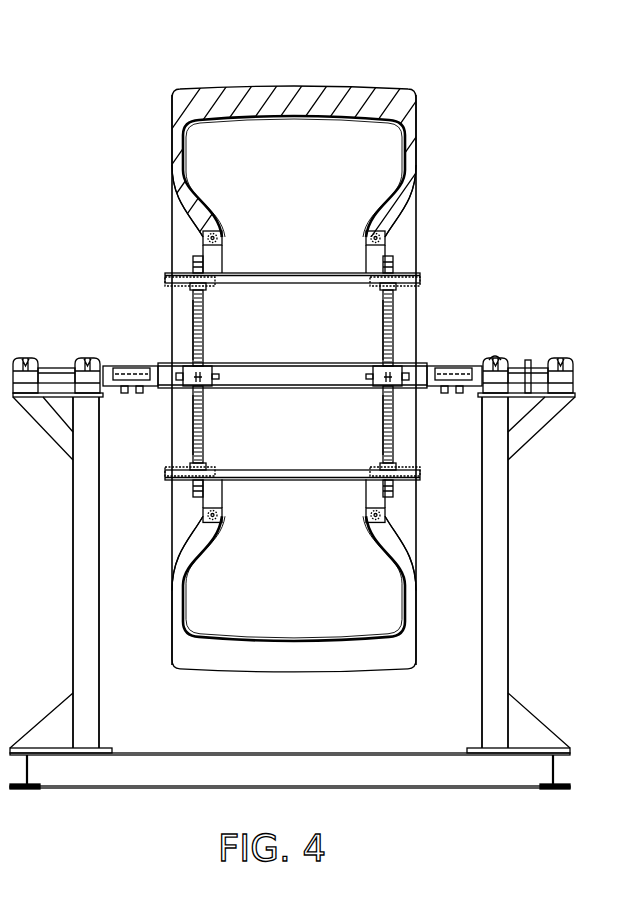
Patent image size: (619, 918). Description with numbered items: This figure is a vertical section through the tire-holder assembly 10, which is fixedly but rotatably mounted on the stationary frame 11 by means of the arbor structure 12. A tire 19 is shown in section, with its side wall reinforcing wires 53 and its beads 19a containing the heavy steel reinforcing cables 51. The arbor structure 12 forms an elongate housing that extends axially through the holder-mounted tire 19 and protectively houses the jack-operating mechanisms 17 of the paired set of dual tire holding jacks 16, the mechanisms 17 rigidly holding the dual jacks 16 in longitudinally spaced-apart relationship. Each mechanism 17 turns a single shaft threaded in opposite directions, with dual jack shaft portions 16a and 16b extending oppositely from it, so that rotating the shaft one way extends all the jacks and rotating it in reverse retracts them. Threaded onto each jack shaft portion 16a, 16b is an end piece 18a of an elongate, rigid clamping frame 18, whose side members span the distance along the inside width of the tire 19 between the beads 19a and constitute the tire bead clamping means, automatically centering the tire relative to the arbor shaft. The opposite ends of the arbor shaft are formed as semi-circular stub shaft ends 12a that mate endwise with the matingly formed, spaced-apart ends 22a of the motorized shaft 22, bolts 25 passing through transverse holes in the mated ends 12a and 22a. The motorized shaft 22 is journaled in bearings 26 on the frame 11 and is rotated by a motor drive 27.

The tire-holder assembly 10 is at (298, 268).
The stationary frame 11 is at (522, 602).
The arbor structure 12 is at (320, 363).
The stub shaft ends 12a is at (125, 366).
The dual tire holding jacks 16 is at (178, 444).
The jack shaft portion 16a is at (203, 331).
The jack shaft portion 16b is at (203, 441).
The jack-operating mechanism 17 is at (210, 387).
The clamping frame 18 is at (283, 283).
The end piece 18a is at (168, 278).
The tire 19 is at (291, 86).
The beads 19a is at (364, 245).
The motorized shaft 22 is at (55, 368).
The motorized shaft ends 22a is at (133, 393).
The bolts 25 is at (494, 358).
The bearings 26 is at (86, 358).
The motor drive 27 is at (532, 365).
The steel reinforcing cables 51 is at (207, 236).
The side wall reinforcing wires 53 is at (180, 170).